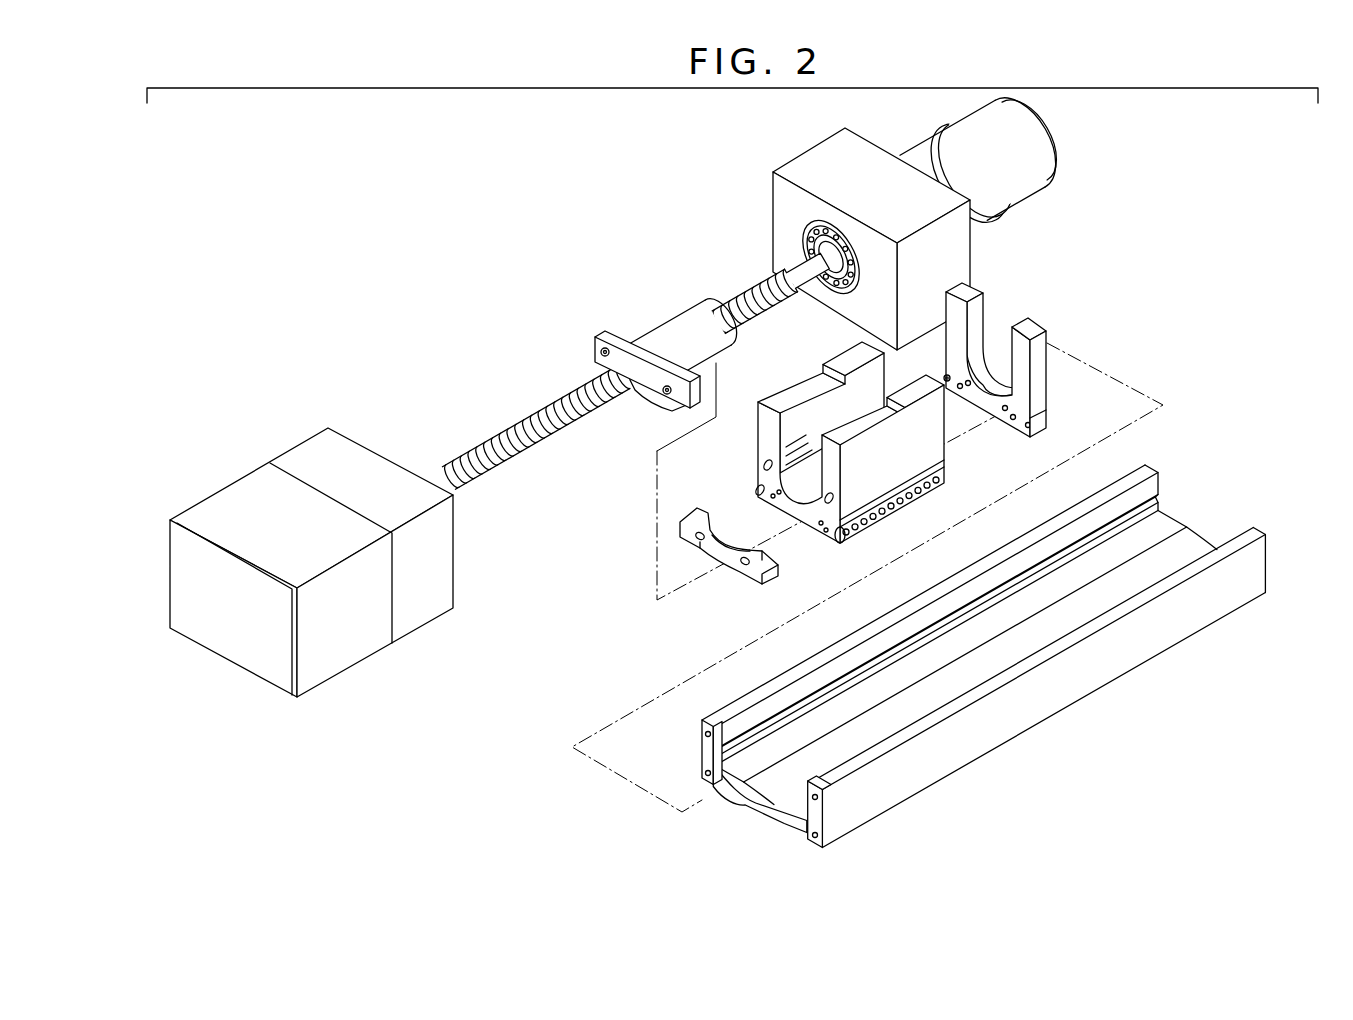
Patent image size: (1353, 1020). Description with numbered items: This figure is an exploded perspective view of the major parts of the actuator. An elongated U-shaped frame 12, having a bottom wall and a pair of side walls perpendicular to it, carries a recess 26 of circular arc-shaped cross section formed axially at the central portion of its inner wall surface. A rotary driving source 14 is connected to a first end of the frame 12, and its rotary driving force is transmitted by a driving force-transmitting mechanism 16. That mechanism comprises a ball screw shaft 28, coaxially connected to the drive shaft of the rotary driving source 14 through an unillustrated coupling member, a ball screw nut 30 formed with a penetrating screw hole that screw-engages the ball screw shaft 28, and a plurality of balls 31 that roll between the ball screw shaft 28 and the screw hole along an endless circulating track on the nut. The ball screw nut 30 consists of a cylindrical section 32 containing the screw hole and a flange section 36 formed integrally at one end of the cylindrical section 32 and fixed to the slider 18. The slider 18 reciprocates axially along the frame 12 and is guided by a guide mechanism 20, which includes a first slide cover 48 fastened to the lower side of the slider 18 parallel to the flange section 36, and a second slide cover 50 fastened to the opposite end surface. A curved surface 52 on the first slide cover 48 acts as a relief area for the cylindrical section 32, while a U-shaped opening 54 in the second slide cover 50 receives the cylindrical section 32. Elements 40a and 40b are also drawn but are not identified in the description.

The frame 12 is at (1064, 714).
The rotary driving source 14 is at (1037, 155).
The driving force-transmitting mechanism 16 is at (637, 361).
The slider 18 is at (876, 453).
The guide mechanism 20 is at (865, 531).
The recess 26 is at (764, 797).
The ball screw shaft 28 is at (520, 425).
The ball screw nut 30 is at (676, 310).
The balls 31 is at (940, 500).
The cylindrical section 32 is at (711, 352).
The flange section 36 is at (664, 414).
The mounting block 40a is at (704, 756).
The mounting block 40b is at (812, 816).
The first slide cover 48 is at (738, 573).
The second slide cover 50 is at (1036, 393).
The curved surface 52 is at (735, 533).
The opening 54 is at (977, 312).